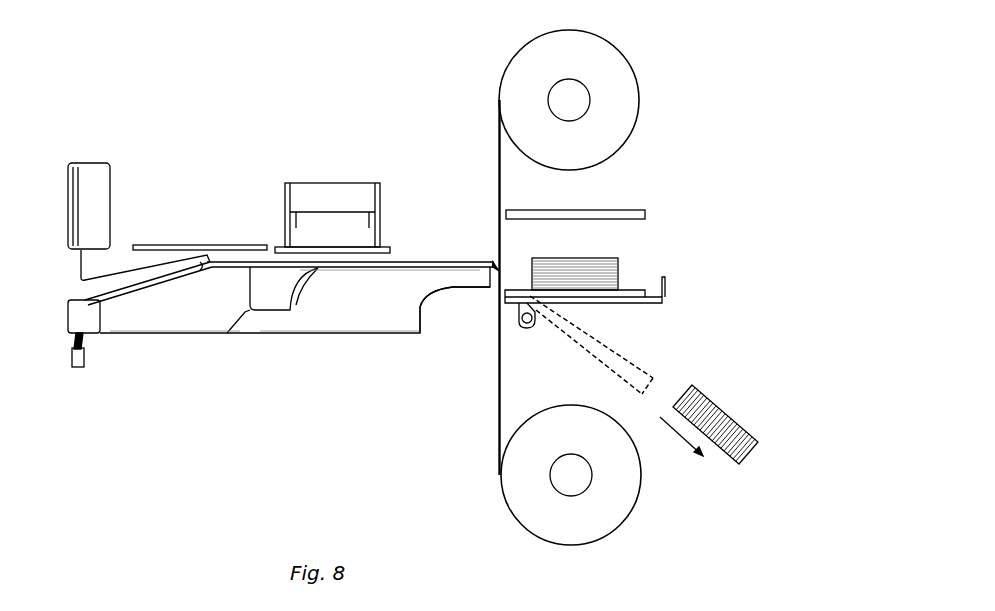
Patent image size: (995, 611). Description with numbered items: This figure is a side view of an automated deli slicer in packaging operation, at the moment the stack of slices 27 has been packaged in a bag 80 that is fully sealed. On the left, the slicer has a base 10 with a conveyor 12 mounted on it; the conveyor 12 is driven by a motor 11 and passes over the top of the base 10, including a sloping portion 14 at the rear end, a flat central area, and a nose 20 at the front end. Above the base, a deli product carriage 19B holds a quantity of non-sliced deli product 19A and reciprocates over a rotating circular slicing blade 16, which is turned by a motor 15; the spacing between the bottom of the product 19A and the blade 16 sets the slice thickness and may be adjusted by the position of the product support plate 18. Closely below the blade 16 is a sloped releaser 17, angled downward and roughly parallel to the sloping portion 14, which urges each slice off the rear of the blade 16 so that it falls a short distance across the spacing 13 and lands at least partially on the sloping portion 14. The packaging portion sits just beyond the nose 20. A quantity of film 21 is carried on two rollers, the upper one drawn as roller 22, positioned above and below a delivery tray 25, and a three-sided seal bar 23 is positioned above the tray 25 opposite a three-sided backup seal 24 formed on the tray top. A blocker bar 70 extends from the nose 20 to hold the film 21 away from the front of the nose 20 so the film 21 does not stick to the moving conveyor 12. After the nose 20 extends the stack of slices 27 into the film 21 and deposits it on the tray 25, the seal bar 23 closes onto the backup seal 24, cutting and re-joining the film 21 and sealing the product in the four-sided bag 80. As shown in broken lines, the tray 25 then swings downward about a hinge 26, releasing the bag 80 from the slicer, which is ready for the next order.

The base 10 is at (355, 315).
The motor 11 is at (67, 330).
The conveyor 12 is at (88, 296).
The spacing 13 is at (128, 302).
The sloping portion 14 is at (200, 312).
The motor 15 is at (110, 178).
The slicing blade 16 is at (227, 245).
The sloped releaser 17 is at (80, 265).
The product support plate 18 is at (388, 250).
The non-sliced deli product 19A is at (325, 212).
The deli product carriage 19B is at (283, 192).
The nose 20 is at (493, 300).
The film 21 is at (497, 142).
The roller 22 is at (633, 72).
The seal bar 23 is at (648, 210).
The backup seal 24 is at (612, 301).
The delivery tray 25 is at (667, 280).
The hinge 26 is at (527, 326).
The stack of slices 27 is at (588, 262).
The blocker bar 70 is at (493, 267).
The bag 80 is at (614, 257).